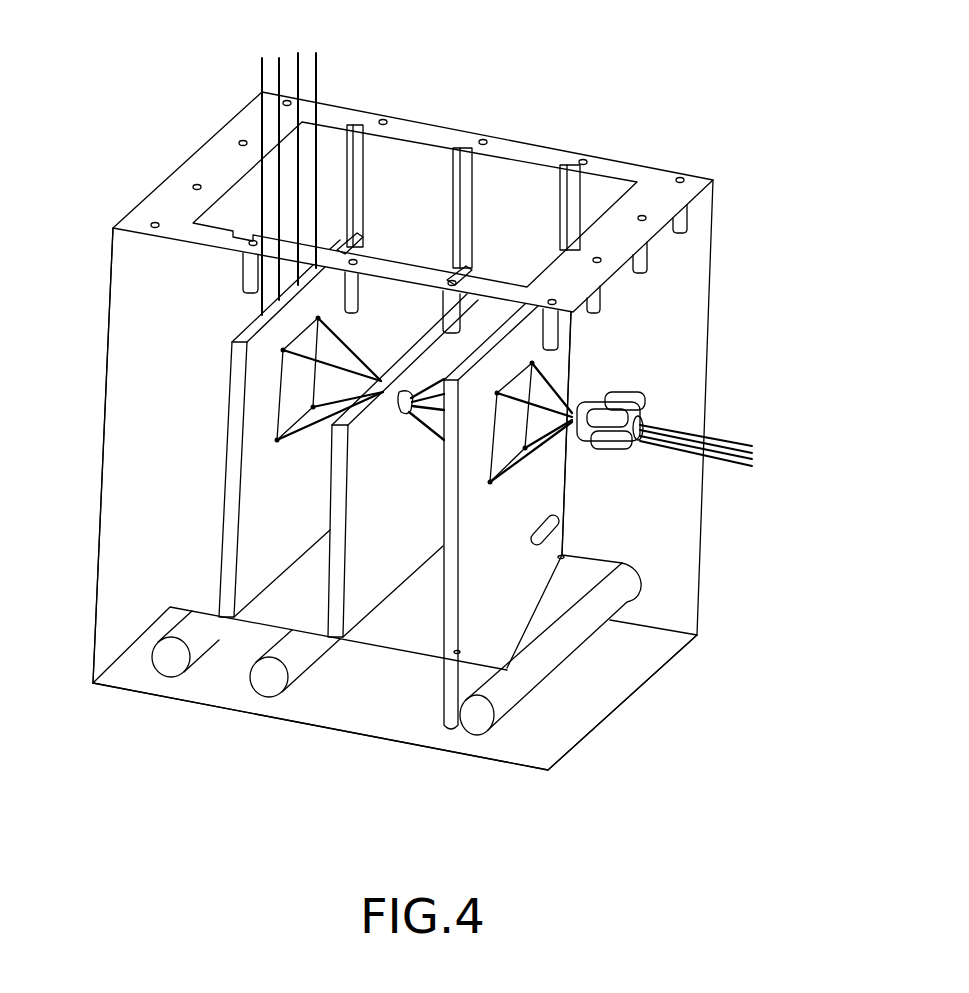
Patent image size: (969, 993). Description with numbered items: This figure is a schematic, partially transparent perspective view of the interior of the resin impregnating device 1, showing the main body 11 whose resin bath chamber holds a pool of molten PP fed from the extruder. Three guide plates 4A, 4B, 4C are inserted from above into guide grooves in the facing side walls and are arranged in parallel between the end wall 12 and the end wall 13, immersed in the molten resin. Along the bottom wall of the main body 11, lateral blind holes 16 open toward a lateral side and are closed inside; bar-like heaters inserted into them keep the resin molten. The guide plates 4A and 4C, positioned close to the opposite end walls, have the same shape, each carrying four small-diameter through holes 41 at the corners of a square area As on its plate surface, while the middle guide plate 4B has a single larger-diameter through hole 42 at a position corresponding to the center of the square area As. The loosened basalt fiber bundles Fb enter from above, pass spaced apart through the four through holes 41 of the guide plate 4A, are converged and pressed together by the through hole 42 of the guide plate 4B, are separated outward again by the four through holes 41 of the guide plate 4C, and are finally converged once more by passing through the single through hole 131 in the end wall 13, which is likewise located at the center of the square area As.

The resin impregnating device 1 is at (722, 160).
The main body 11 is at (622, 168).
The end wall 12 is at (101, 488).
The end wall 13 is at (628, 697).
The through hole 131 is at (583, 403).
The lateral blind holes 16 is at (177, 655).
The guide plate 4A is at (265, 542).
The guide plate 4B is at (375, 543).
The guide plate 4C is at (497, 555).
The through holes 41 is at (283, 350).
The through hole 42 is at (403, 407).
The square area As is at (296, 383).
The basalt fiber bundles Fb is at (262, 72).